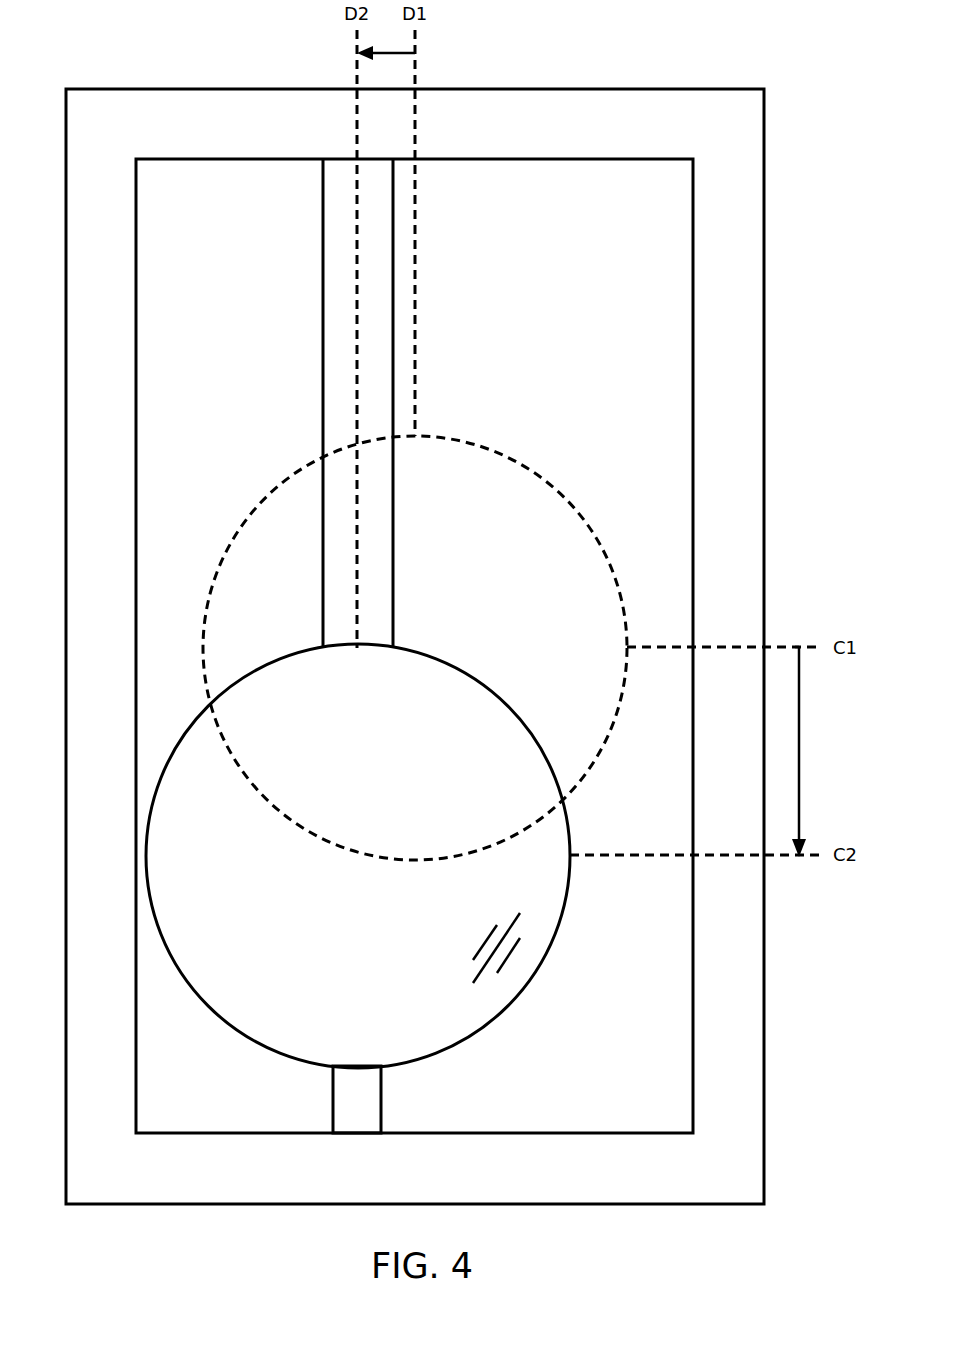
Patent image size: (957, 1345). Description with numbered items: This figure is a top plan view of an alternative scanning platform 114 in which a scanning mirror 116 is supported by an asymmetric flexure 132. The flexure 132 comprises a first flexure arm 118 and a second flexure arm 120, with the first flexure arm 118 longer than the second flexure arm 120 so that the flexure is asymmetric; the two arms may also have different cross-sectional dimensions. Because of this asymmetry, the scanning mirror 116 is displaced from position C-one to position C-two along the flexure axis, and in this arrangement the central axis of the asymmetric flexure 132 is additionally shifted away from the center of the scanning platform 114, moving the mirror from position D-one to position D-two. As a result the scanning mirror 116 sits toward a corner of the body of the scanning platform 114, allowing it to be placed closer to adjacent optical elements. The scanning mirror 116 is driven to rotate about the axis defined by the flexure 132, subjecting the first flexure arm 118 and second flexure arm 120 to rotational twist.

The scanning platform 114 is at (765, 123).
The scanning mirror 116 is at (358, 856).
The first flexure arm 118 is at (326, 403).
The second flexure arm 120 is at (381, 1111).
The asymmetric flexure 132 is at (322, 356).